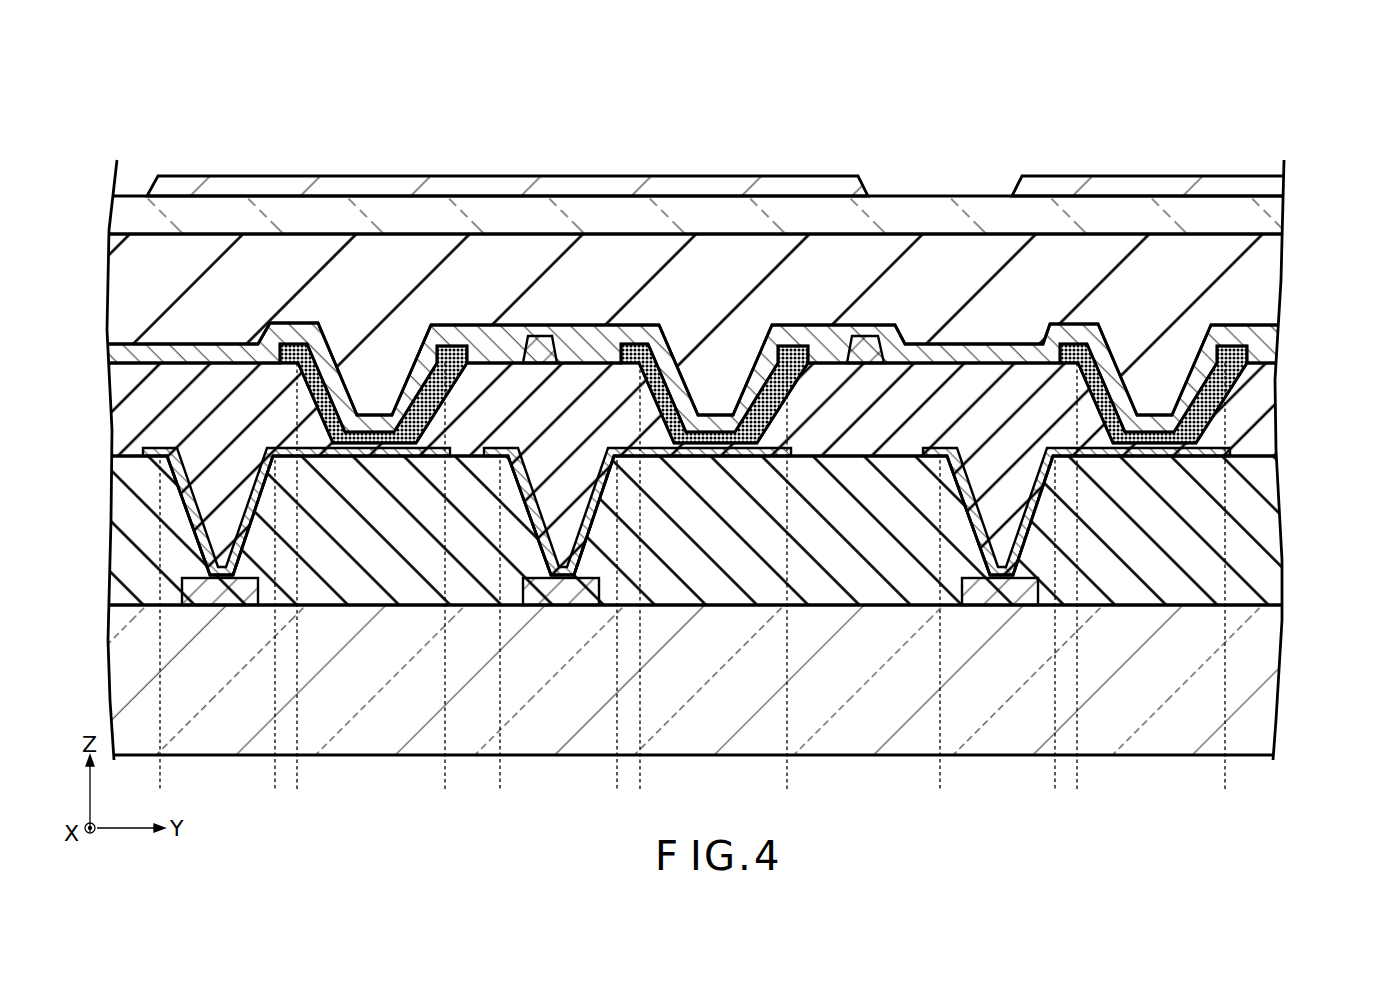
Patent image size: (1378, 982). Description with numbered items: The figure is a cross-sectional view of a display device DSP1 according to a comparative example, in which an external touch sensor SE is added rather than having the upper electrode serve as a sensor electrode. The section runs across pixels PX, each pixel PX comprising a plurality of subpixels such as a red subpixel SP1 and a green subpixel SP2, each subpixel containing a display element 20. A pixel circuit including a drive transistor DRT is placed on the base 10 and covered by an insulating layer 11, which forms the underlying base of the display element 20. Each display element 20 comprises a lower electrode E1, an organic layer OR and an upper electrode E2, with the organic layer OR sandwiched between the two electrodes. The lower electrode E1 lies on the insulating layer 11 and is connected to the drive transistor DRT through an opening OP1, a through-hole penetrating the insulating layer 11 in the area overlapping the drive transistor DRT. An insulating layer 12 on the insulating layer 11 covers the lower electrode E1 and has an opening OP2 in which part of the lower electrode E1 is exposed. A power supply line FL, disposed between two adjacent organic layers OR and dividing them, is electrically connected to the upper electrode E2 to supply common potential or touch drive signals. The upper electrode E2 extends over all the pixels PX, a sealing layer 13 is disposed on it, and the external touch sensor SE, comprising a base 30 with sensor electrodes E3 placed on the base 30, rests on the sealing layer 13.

The display device DSP1 is at (186, 136).
The pixel PX is at (810, 52).
The red subpixel SP1 is at (408, 96).
The green subpixel SP2 is at (752, 96).
The display element 20 is at (420, 137).
The lower electrode E1 is at (393, 424).
The organic layer OR is at (368, 434).
The upper electrode E2 is at (340, 408).
The sensor electrode E3 is at (225, 186).
The base 30 is at (1268, 216).
The external touch sensor SE is at (1328, 173).
The power supply line FL is at (541, 338).
The sealing layer 13 is at (1262, 292).
The insulating layer 12 is at (1262, 437).
The insulating layer 11 is at (1262, 540).
The base 10 is at (1262, 683).
The drive transistor DRT is at (228, 606).
The opening OP1 is at (273, 781).
The opening OP2 is at (443, 781).